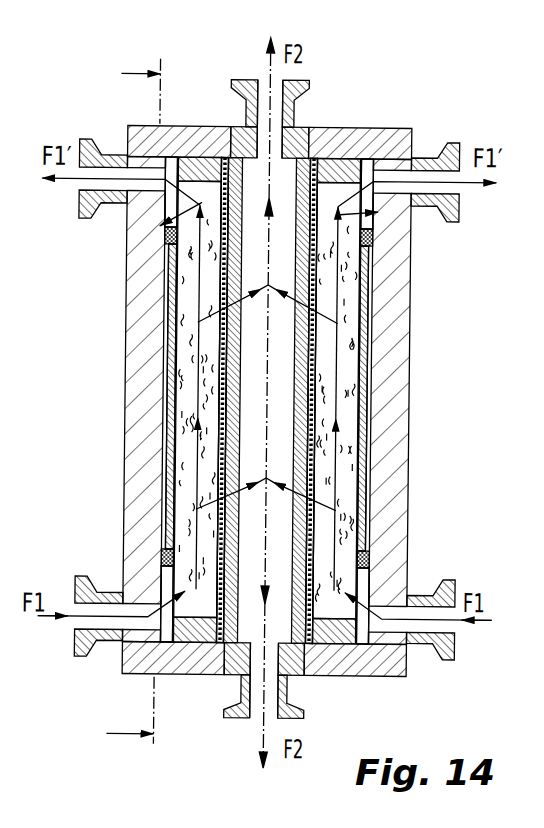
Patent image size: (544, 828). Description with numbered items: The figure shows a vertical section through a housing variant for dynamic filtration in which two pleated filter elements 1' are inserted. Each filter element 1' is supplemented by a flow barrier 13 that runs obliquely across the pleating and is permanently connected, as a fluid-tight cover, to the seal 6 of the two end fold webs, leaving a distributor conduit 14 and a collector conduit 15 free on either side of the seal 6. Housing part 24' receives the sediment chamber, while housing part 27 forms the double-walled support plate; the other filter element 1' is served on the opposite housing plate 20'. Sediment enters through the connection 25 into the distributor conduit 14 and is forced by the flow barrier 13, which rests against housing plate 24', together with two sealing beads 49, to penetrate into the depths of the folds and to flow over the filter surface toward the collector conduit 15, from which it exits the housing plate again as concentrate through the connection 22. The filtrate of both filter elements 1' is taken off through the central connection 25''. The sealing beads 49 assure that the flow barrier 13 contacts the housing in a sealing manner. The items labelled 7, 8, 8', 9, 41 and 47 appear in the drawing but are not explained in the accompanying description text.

The filter element 1' is at (267, 387).
The seal 6 is at (210, 168).
The sleeve insert in upper end block 7 is at (250, 142).
The perforated inner tube wall 8 is at (248, 400).
The perforated support strip 8' is at (270, 400).
The inner perforated tube 9 is at (222, 340).
The flow barrier 13 is at (428, 387).
The distributor conduit 14 is at (168, 640).
The collector conduit 15 is at (168, 160).
The housing plate 20' is at (414, 402).
The connection 22 is at (112, 206).
The housing plate 24' is at (116, 399).
The connection 25 is at (264, 598).
The central connection 25'' is at (291, 392).
The housing part 27 is at (240, 672).
The annular distribution channel 41 is at (245, 401).
The central bore 47 is at (262, 532).
The sealing beads 49 is at (164, 252).